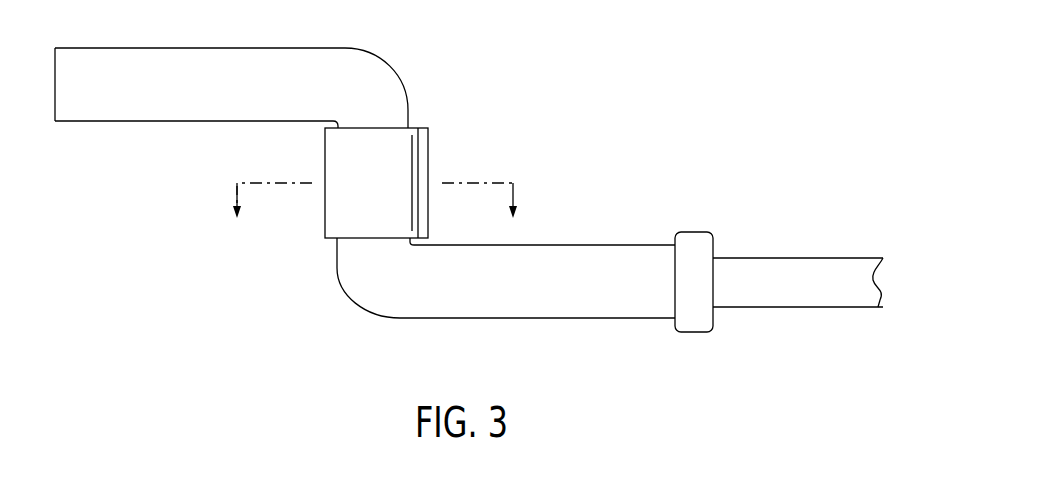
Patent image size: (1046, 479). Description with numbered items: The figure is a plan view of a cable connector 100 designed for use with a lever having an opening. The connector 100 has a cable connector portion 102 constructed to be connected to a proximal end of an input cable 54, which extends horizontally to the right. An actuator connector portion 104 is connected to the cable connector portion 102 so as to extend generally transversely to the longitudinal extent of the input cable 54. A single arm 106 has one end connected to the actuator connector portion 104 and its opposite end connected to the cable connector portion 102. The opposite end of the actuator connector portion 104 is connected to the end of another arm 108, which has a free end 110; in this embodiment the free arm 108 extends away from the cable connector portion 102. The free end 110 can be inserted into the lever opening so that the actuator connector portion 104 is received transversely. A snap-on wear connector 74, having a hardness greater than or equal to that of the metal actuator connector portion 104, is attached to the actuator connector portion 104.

The connector 100 is at (284, 334).
The arm 108 is at (148, 62).
The free end 110 is at (52, 112).
The wear connector 74 is at (333, 167).
The cable connector portion 102 is at (610, 303).
The actuator connector portion 104 is at (355, 252).
The arm 106 is at (420, 300).
The input cable 54 is at (823, 272).